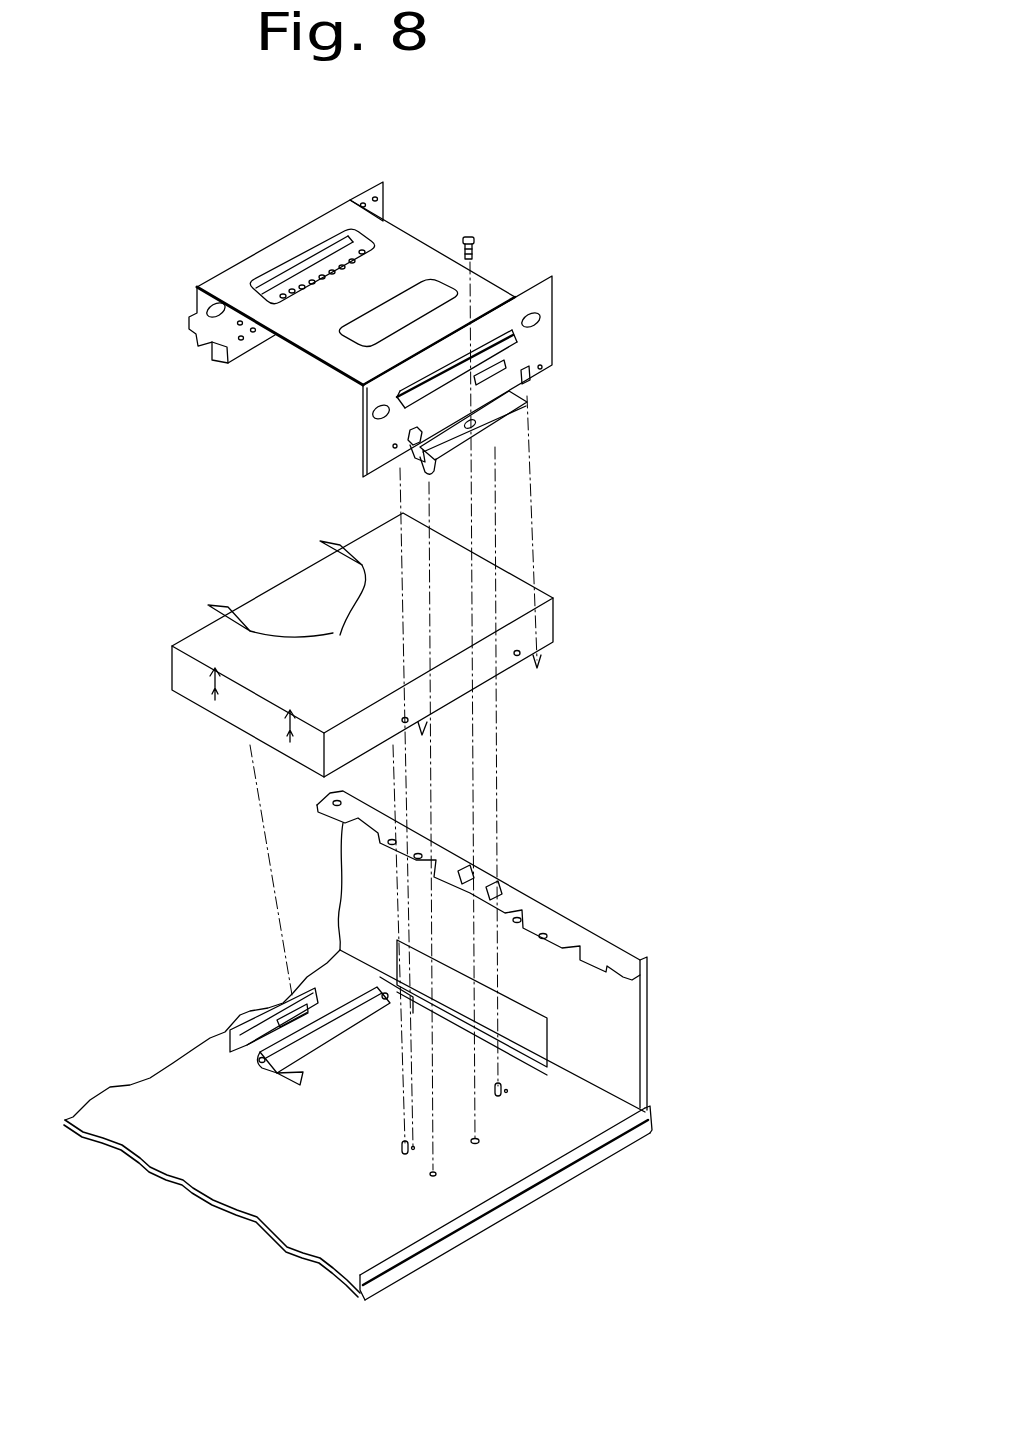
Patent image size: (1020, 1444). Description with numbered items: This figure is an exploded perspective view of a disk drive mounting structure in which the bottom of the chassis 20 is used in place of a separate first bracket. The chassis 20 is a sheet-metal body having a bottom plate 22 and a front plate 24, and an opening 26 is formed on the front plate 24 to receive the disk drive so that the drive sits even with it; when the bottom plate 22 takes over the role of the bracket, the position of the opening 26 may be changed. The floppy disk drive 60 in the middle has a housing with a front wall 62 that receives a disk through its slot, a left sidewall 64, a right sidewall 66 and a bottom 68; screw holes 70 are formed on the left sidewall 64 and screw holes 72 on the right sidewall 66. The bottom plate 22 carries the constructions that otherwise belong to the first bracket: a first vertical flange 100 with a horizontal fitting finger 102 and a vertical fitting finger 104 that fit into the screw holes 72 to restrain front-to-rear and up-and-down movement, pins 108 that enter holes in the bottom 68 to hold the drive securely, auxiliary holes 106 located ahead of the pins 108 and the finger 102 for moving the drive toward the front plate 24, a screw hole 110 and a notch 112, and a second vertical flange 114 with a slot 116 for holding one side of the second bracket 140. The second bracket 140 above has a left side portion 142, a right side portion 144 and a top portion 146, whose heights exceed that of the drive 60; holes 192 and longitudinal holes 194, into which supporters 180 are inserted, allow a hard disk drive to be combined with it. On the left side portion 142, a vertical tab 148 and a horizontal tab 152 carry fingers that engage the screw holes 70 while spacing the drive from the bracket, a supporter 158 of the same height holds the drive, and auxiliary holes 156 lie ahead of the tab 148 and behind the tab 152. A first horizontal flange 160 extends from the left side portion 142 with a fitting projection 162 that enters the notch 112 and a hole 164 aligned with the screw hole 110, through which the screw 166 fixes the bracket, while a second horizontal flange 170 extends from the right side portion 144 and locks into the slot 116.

The chassis 20 is at (390, 1045).
The bottom plate 22 is at (387, 1227).
The front plate 24 is at (618, 1007).
The opening 26 is at (515, 1025).
The floppy disk drive 60 is at (411, 634).
The front wall 62 is at (506, 572).
The left sidewall 64 is at (540, 617).
The right sidewall 66 is at (283, 580).
The bottom 68 is at (220, 718).
The screw holes 70 is at (516, 651).
The screw holes 72 is at (308, 615).
The first vertical flange 100 is at (285, 1044).
The horizontal fitting finger 102 is at (259, 1058).
The vertical fitting finger 104 is at (385, 1000).
The auxiliary holes 106 is at (507, 1092).
The pins 108 is at (501, 1084).
The screw hole 110 is at (480, 1139).
The notch 112 is at (437, 1173).
The second vertical flange 114 is at (244, 1004).
The slot 116 is at (277, 1007).
The second bracket 140 is at (389, 350).
The left side portion 142 is at (543, 294).
The right side portion 144 is at (385, 197).
The top portion 146 is at (407, 255).
The vertical tab 148 is at (503, 464).
The horizontal tab 152 is at (414, 459).
The auxiliary holes 156 is at (541, 369).
The supporter 158 is at (506, 364).
The first horizontal flange 160 is at (452, 452).
The fitting projection 162 is at (430, 472).
The hole 164 is at (474, 427).
The screw 166 is at (470, 236).
The second horizontal flange 170 is at (218, 355).
The supporters 180 is at (300, 262).
The holes 192 is at (212, 309).
The longitudinal holes 194 is at (427, 378).